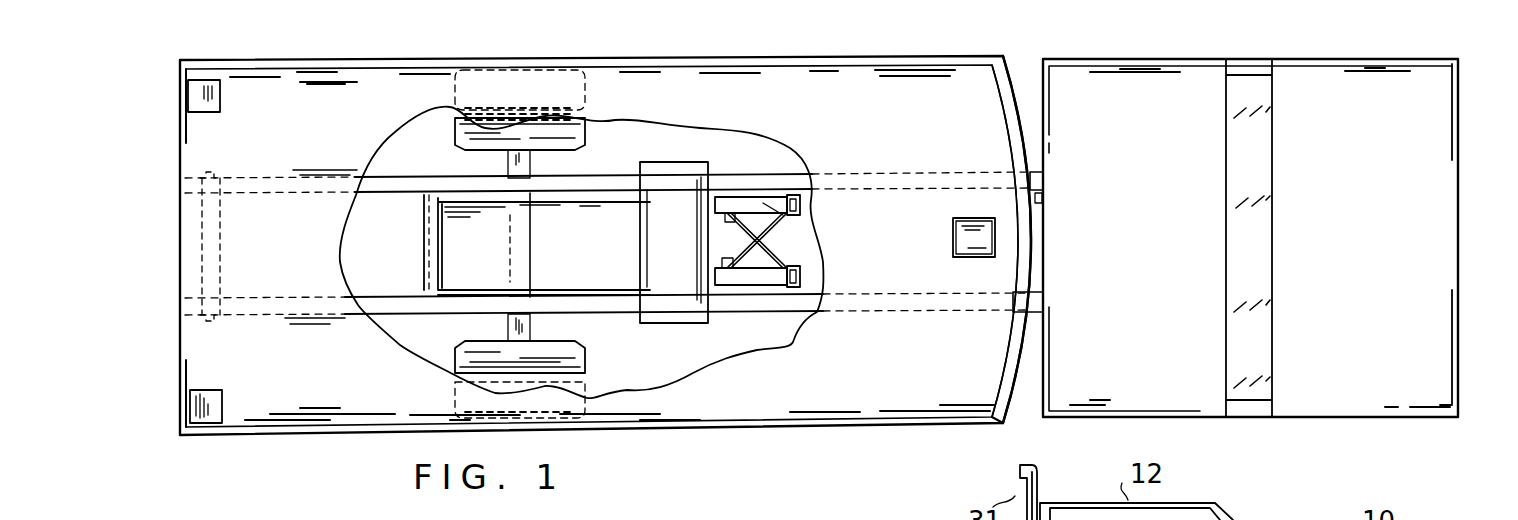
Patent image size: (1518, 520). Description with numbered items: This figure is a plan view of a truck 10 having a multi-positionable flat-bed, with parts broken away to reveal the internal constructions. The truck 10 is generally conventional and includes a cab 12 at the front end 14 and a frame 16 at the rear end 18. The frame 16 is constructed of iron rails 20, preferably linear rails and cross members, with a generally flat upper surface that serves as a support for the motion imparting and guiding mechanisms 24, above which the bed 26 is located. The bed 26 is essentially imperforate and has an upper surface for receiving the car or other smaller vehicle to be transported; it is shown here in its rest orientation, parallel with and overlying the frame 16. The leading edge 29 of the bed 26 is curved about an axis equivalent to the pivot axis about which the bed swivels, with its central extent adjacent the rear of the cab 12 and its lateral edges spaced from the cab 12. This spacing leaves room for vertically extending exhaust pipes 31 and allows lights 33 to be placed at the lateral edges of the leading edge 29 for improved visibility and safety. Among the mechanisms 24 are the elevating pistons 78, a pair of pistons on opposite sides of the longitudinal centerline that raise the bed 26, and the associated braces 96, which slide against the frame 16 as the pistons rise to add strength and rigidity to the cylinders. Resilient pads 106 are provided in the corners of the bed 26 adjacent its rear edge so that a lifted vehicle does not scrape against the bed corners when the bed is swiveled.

The truck 10 is at (1102, 45).
The cab 12 is at (1186, 58).
The front end 14 is at (1457, 417).
The frame 16 is at (364, 59).
The rear end 18 is at (178, 138).
The iron rails 20 is at (1033, 303).
The motion imparting and guiding mechanisms 24 is at (412, 240).
The bed 26 is at (720, 407).
The leading edge 29 is at (1007, 417).
The exhaust pipes 31 is at (1028, 98).
The lights 33 is at (1003, 57).
The elevating pistons 78 is at (755, 282).
The braces 96 is at (735, 217).
The resilient pads 106 is at (196, 408).